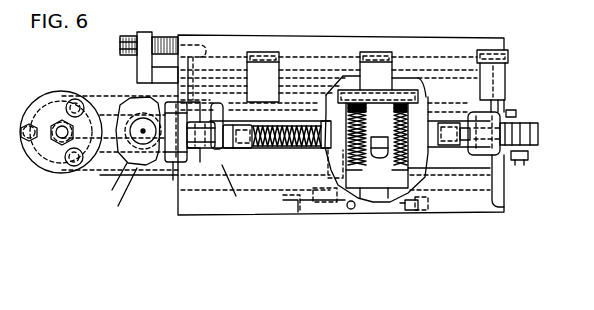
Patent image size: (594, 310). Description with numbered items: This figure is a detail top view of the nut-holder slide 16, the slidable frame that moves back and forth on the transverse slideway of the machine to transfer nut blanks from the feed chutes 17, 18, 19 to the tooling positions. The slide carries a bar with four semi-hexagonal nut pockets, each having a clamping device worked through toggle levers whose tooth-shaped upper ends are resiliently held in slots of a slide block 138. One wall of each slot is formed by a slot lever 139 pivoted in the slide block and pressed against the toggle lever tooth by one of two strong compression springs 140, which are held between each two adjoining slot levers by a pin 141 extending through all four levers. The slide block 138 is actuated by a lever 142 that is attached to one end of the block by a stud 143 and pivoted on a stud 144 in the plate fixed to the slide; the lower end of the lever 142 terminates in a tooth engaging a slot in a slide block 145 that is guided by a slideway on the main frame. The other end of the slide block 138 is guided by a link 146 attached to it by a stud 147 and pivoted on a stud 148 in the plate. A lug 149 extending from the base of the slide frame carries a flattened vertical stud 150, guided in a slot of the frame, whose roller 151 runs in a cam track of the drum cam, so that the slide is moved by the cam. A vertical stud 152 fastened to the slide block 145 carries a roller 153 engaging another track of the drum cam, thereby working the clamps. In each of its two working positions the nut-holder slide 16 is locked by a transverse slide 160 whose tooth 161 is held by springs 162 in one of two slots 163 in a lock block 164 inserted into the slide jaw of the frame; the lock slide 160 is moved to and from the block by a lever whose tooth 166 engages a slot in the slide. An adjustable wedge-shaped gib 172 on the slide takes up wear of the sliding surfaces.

The nut holder slide 16 is at (186, 36).
The feed chute 17 is at (258, 52).
The feed chute 18 is at (372, 52).
The feed chute 19 is at (483, 51).
The slide block 138 is at (220, 104).
The slot lever 139 is at (342, 147).
The compression spring 140 is at (287, 149).
The pin 141 is at (477, 148).
The lever 142 is at (168, 163).
The stud 143 is at (180, 165).
The stud 144 is at (193, 165).
The slide block 145 is at (172, 195).
The link 146 is at (539, 133).
The stud 147 is at (517, 113).
The stud 148 is at (528, 157).
The lug 149 is at (48, 92).
The vertical stud 150 is at (48, 170).
The roller 151 is at (62, 172).
The vertical stud 152 is at (118, 98).
The roller 153 is at (195, 177).
The transverse slide 160 is at (333, 150).
The tooth 161 is at (381, 188).
The spring 162 is at (395, 103).
The slot 163 is at (360, 208).
The lock block 164 is at (405, 206).
The tooth 166 is at (380, 135).
The wedge-shaped gib 172 is at (146, 36).